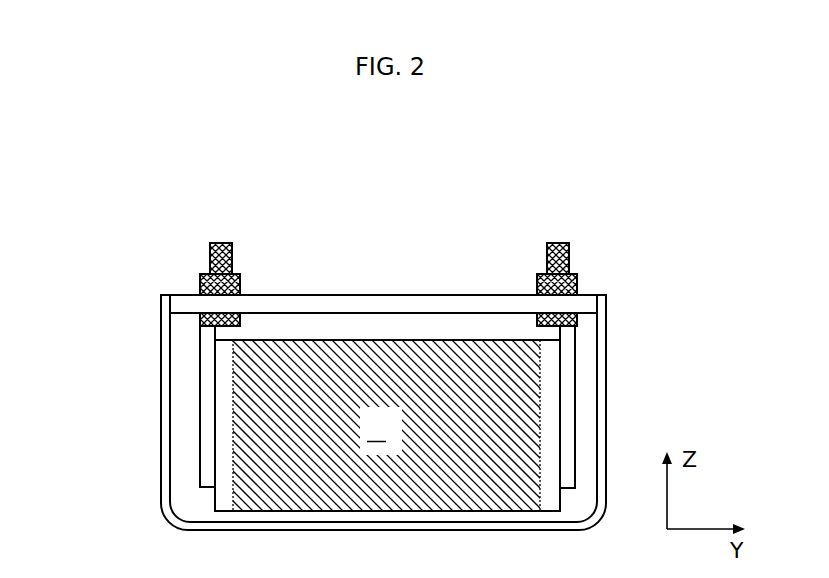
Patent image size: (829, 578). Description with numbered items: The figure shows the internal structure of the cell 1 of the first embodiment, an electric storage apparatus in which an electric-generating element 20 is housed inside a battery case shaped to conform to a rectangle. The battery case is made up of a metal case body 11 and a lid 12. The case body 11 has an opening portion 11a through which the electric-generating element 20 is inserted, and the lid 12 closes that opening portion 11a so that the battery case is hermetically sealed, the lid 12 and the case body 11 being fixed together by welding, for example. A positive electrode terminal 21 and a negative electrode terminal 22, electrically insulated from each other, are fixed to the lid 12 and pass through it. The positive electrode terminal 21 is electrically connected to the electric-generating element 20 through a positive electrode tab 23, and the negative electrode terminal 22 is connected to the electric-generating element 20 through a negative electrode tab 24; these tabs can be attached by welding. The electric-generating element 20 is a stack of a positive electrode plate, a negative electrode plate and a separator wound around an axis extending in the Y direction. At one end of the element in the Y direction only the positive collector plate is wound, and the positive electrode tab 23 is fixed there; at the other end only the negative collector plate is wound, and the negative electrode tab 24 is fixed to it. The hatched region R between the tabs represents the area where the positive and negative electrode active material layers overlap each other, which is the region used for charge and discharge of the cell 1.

The cell 1 is at (627, 275).
The case body 11 is at (162, 443).
The opening portion 11a is at (162, 300).
The lid 12 is at (387, 303).
The electric-generating element 20 is at (313, 339).
The positive electrode terminal 21 is at (217, 242).
The negative electrode terminal 22 is at (555, 242).
The positive electrode tab 23 is at (207, 386).
The negative electrode tab 24 is at (565, 389).
The region R is at (381, 431).